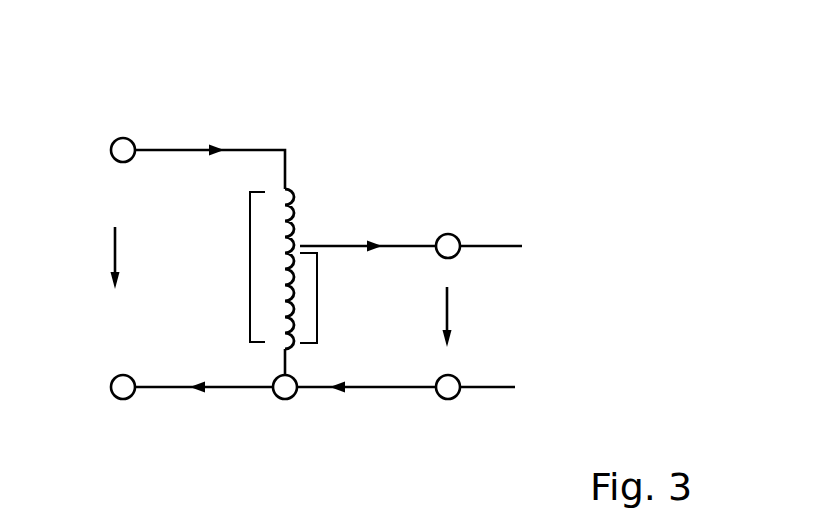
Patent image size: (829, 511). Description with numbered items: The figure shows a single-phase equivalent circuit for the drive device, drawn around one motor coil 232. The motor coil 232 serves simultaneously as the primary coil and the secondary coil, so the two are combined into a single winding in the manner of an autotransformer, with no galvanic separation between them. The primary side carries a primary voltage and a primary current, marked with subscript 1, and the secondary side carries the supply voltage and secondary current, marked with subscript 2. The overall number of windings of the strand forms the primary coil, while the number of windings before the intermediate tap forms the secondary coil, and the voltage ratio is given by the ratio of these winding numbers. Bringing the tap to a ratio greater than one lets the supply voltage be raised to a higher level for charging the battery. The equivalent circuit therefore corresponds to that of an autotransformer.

The motor coil 232 is at (304, 172).
The primary side quantities (I1, U1, N1) 1 is at (185, 265).
The secondary side quantities (I2, U2, N2) 2 is at (409, 313).